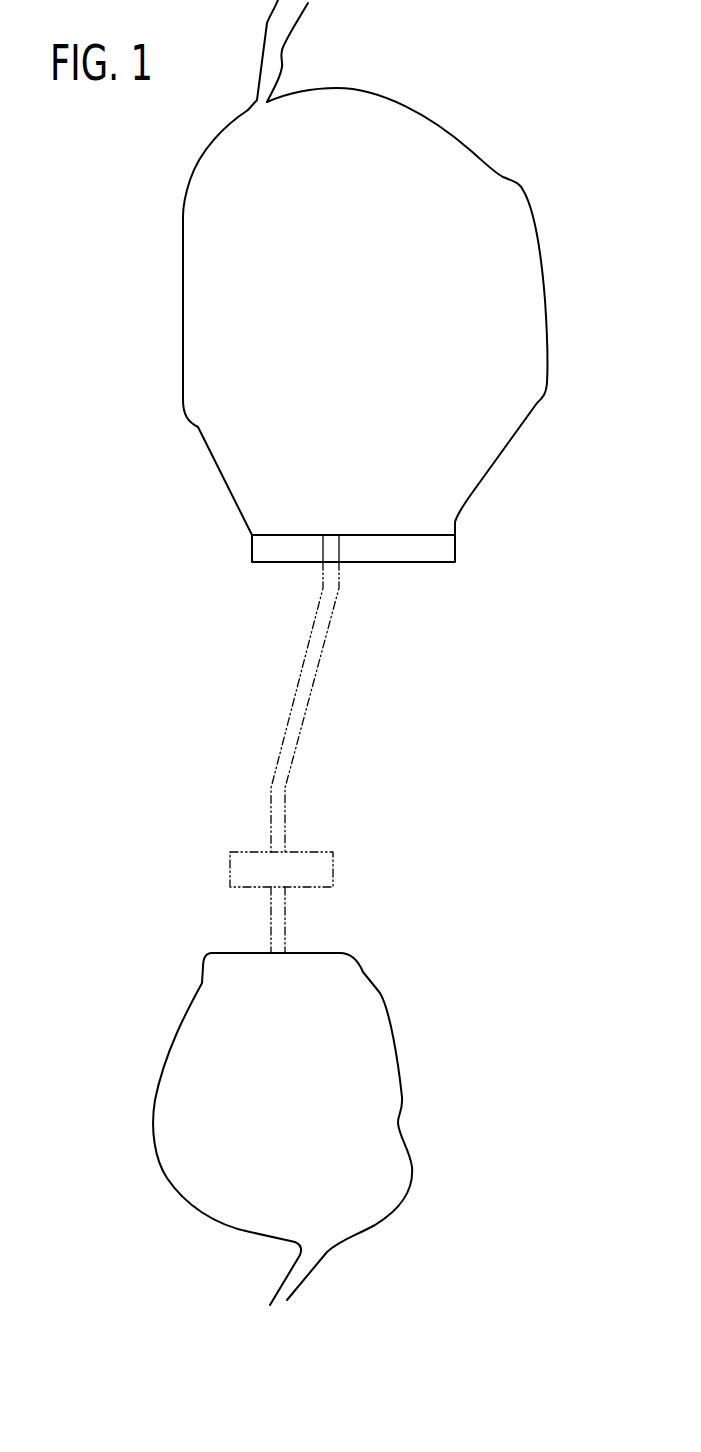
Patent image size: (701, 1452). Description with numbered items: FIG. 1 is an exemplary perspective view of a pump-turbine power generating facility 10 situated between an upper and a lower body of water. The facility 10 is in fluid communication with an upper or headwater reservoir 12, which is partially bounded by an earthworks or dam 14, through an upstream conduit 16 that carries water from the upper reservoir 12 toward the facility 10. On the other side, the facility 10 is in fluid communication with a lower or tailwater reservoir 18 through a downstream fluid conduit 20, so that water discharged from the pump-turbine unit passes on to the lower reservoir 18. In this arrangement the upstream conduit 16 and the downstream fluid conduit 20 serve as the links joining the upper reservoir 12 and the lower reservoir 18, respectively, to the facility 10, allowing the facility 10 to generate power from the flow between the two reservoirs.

The pump-turbine power generating facility 10 is at (344, 869).
The upper reservoir 12 is at (538, 362).
The dam 14 is at (457, 548).
The upstream conduit 16 is at (303, 705).
The lower reservoir 18 is at (383, 1013).
The downstream fluid conduit 20 is at (282, 923).